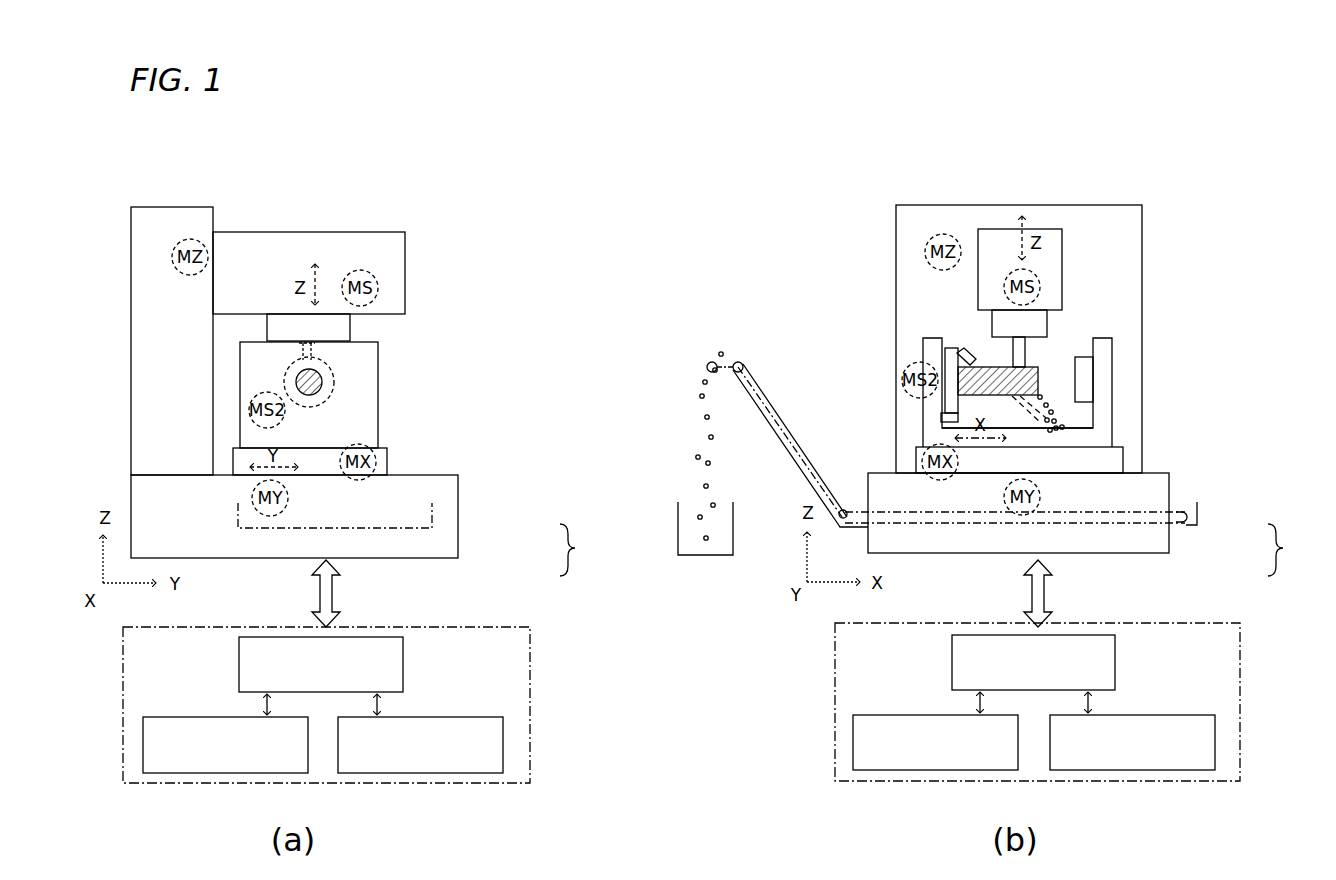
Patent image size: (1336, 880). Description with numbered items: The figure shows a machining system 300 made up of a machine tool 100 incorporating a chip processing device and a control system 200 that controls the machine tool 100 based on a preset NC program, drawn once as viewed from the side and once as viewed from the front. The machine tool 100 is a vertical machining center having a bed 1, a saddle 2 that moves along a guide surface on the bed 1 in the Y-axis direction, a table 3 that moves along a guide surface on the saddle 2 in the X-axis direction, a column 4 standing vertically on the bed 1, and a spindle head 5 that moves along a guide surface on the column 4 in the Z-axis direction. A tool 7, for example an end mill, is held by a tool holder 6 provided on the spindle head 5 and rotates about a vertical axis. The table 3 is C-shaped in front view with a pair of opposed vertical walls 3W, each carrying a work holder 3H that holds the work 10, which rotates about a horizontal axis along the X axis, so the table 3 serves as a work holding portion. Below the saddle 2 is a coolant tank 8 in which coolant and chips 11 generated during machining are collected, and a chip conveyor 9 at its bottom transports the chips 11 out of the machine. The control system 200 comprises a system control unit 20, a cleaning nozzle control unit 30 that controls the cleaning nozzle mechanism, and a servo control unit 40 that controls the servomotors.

The bed 1 is at (445, 476).
The saddle 2 is at (380, 450).
The table 3 is at (1113, 438).
The vertical walls 3W is at (378, 384).
The work holder 3H is at (330, 396).
The column 4 is at (180, 207).
The spindle head 5 is at (385, 240).
The tool holder 6 is at (348, 334).
The tool 7 is at (267, 333).
The coolant tank 8 is at (432, 514).
The chip conveyor 9 is at (776, 406).
The work 10 is at (334, 375).
The chips 11 is at (1048, 408).
The system control unit 20 is at (956, 350).
The cleaning nozzle control unit 30 is at (580, 744).
The servo control unit 40 is at (776, 744).
The machine tool 100 is at (470, 546).
The control system 200 is at (503, 627).
The machining system 300 is at (947, 550).